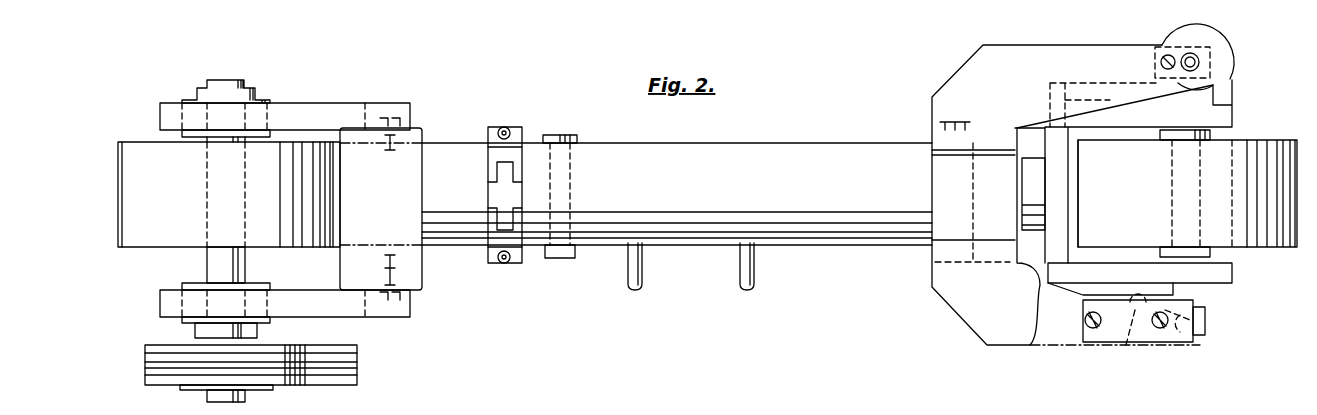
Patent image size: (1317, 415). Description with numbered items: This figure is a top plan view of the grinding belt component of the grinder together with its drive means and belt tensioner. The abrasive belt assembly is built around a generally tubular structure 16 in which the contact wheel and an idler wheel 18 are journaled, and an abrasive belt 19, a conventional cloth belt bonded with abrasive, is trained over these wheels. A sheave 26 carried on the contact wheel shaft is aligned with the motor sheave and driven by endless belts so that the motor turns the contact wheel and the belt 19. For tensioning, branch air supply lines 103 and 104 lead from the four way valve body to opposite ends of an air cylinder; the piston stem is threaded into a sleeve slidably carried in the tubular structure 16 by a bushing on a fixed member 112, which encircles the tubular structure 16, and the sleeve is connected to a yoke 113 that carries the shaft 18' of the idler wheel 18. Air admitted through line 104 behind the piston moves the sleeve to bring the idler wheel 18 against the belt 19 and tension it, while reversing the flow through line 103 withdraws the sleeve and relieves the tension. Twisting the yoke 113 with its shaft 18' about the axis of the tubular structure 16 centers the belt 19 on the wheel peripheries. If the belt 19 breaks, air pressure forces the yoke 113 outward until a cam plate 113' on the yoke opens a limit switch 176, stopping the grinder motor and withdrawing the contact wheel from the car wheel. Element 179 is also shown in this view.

The tubular structure 16 is at (780, 143).
The idler wheel 18 is at (1187, 206).
The shaft of the idler wheel 18' is at (1239, 134).
The abrasive belt 19 is at (270, 209).
The sheave 26 is at (300, 382).
The branch air supply line 103 is at (740, 276).
The branch air supply line 104 is at (628, 276).
The fixed member 112 is at (980, 52).
The yoke 113 is at (1124, 307).
The cam plate 113' is at (1229, 305).
The limit switch 176 is at (1178, 330).
The actuator 179 is at (1126, 345).